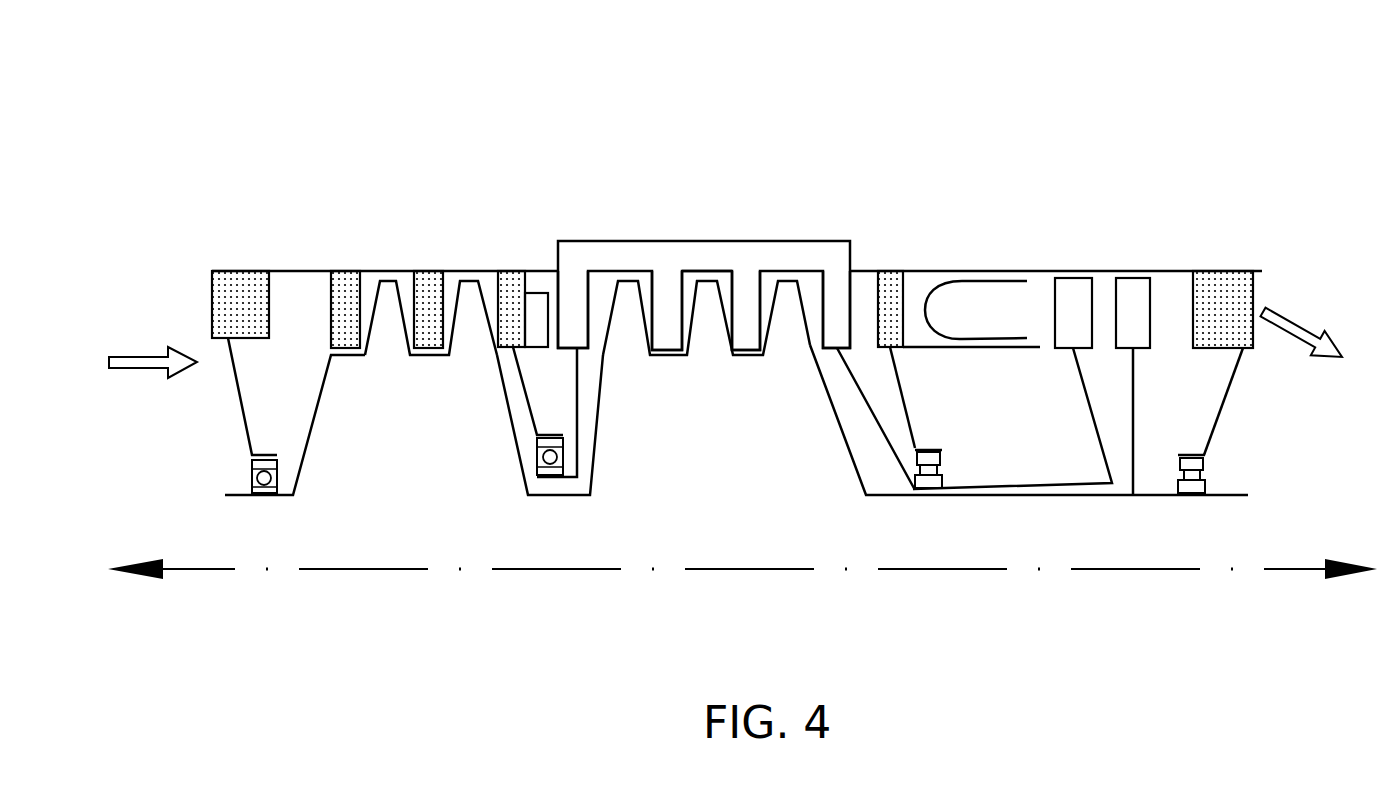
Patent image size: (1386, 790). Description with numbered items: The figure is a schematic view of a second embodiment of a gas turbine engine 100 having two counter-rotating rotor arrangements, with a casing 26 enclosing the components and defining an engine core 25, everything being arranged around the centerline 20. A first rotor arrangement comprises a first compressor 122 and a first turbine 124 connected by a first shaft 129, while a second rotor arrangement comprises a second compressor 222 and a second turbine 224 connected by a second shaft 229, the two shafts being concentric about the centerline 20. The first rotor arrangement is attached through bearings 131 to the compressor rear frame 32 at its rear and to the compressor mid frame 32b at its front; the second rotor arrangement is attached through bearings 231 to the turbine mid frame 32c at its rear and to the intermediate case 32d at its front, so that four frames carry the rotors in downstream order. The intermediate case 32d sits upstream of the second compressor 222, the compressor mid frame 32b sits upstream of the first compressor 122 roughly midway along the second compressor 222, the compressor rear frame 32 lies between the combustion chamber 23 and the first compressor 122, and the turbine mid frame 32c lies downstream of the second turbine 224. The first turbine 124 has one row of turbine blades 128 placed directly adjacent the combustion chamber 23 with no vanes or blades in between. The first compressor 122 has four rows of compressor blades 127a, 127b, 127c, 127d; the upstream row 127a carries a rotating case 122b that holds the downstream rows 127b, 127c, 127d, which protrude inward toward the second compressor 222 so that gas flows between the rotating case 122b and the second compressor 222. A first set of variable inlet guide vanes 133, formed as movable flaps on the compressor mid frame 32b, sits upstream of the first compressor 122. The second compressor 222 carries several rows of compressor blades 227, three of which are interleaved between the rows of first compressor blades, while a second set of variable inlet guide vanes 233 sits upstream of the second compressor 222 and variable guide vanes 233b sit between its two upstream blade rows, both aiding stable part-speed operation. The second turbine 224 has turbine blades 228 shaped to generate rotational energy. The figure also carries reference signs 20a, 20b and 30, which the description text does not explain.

The gas turbine engine 100 is at (1208, 73).
The centerline 20 is at (778, 571).
The first rotor end 20a is at (225, 496).
The second rotor end 20b is at (1248, 495).
The combustion chamber 23 is at (987, 302).
The engine core 25 is at (302, 296).
The casing 26 is at (307, 270).
The flow direction 30 is at (145, 362).
The compressor rear frame 32 is at (893, 290).
The compressor mid frame 32b is at (517, 288).
The turbine mid frame 32c is at (1243, 302).
The intermediate case 32d is at (222, 305).
The first compressor 122 is at (783, 192).
The rotating case 122b is at (738, 199).
The first turbine 124 is at (1137, 245).
The compressor blades 127a is at (575, 290).
The compressor blades 127b is at (668, 290).
The compressor blades 127c is at (748, 285).
The compressor blades 127d is at (835, 285).
The turbine blades 128 is at (1071, 293).
The first shaft 129 is at (1070, 488).
The bearings 131 is at (550, 468).
The first set of variable inlet guide vanes 133 is at (530, 295).
The second compressor 222 is at (752, 412).
The second turbine 224 is at (1224, 250).
The compressor blades 227 is at (387, 292).
The turbine blades 228 is at (1141, 305).
The second shaft 229 is at (1150, 497).
The bearings 231 is at (265, 492).
The second set of variable inlet guide vanes 233 is at (340, 293).
The variable guide vanes 233b is at (428, 293).